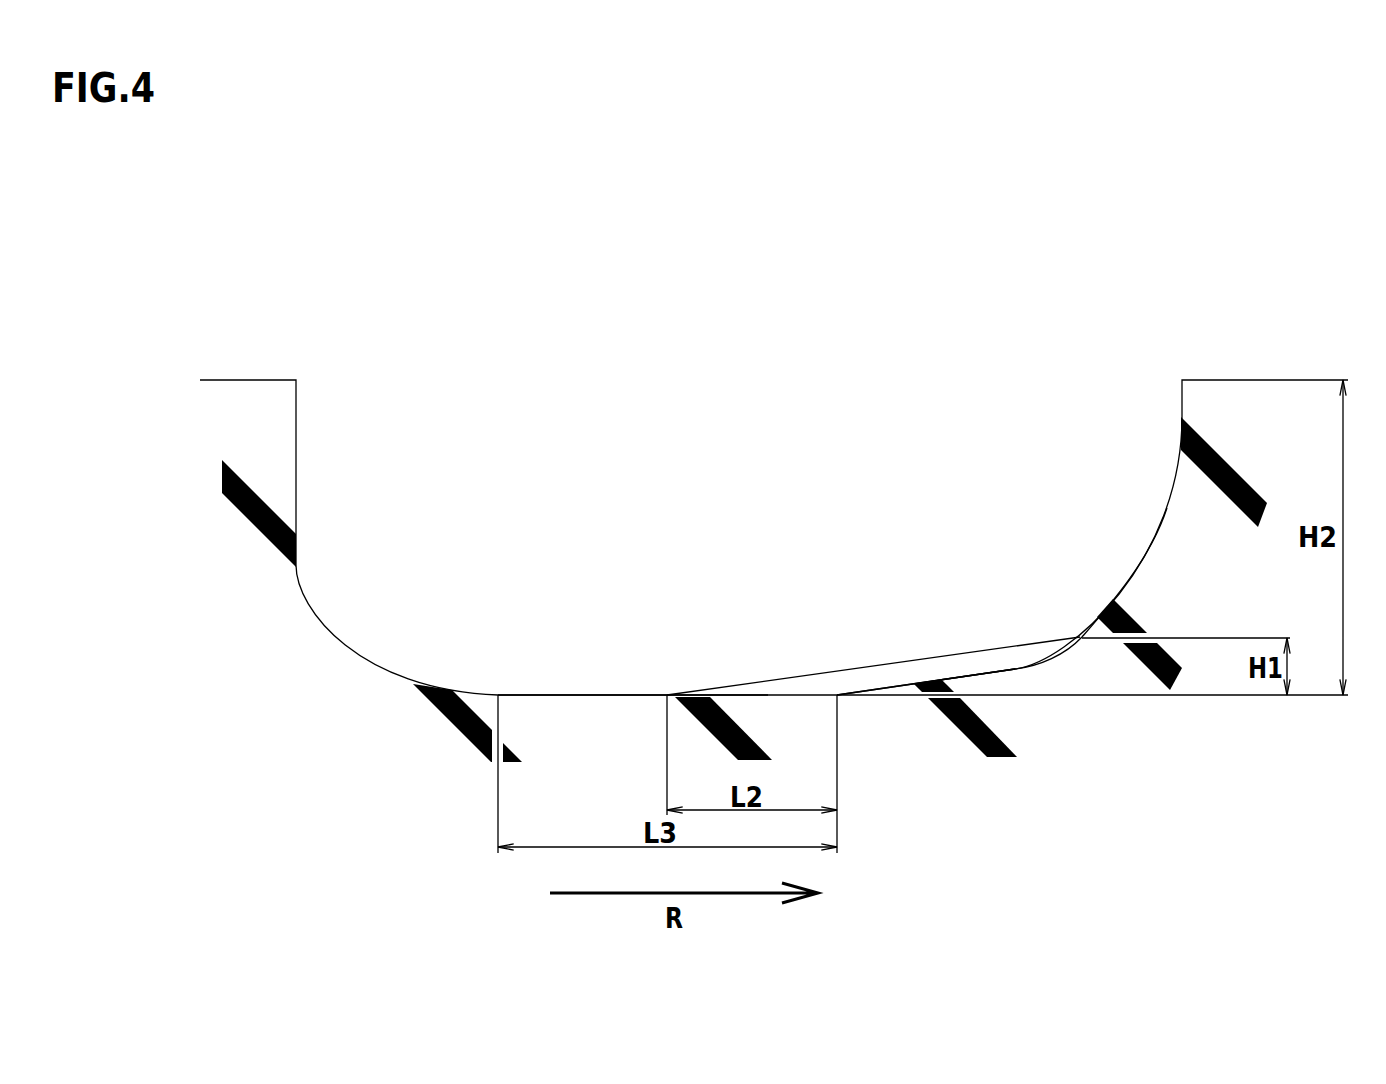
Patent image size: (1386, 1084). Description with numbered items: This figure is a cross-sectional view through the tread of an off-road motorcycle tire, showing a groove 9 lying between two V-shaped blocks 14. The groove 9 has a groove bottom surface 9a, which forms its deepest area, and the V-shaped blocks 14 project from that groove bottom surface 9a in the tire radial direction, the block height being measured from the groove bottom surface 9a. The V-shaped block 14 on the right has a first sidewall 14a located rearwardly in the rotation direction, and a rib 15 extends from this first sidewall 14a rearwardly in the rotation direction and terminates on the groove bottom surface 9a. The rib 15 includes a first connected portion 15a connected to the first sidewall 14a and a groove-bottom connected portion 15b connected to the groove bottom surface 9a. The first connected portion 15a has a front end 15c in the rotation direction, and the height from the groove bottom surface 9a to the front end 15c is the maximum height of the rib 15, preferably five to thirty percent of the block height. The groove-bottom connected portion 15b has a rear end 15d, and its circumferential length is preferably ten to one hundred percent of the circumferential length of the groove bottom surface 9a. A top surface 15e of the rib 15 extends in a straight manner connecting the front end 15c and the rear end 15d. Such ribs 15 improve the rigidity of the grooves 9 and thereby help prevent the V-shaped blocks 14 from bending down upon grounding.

The V-shaped block 14 is at (266, 402).
The groove 9 is at (445, 495).
The groove bottom surface 9a is at (577, 678).
The rib 15 is at (877, 680).
The rear end 15d is at (667, 695).
The groove-bottom connected portion 15b is at (768, 695).
The top surface 15e is at (913, 658).
The first connected portion 15a is at (1010, 668).
The front end 15c is at (1080, 637).
The first sidewall 14a is at (1167, 508).